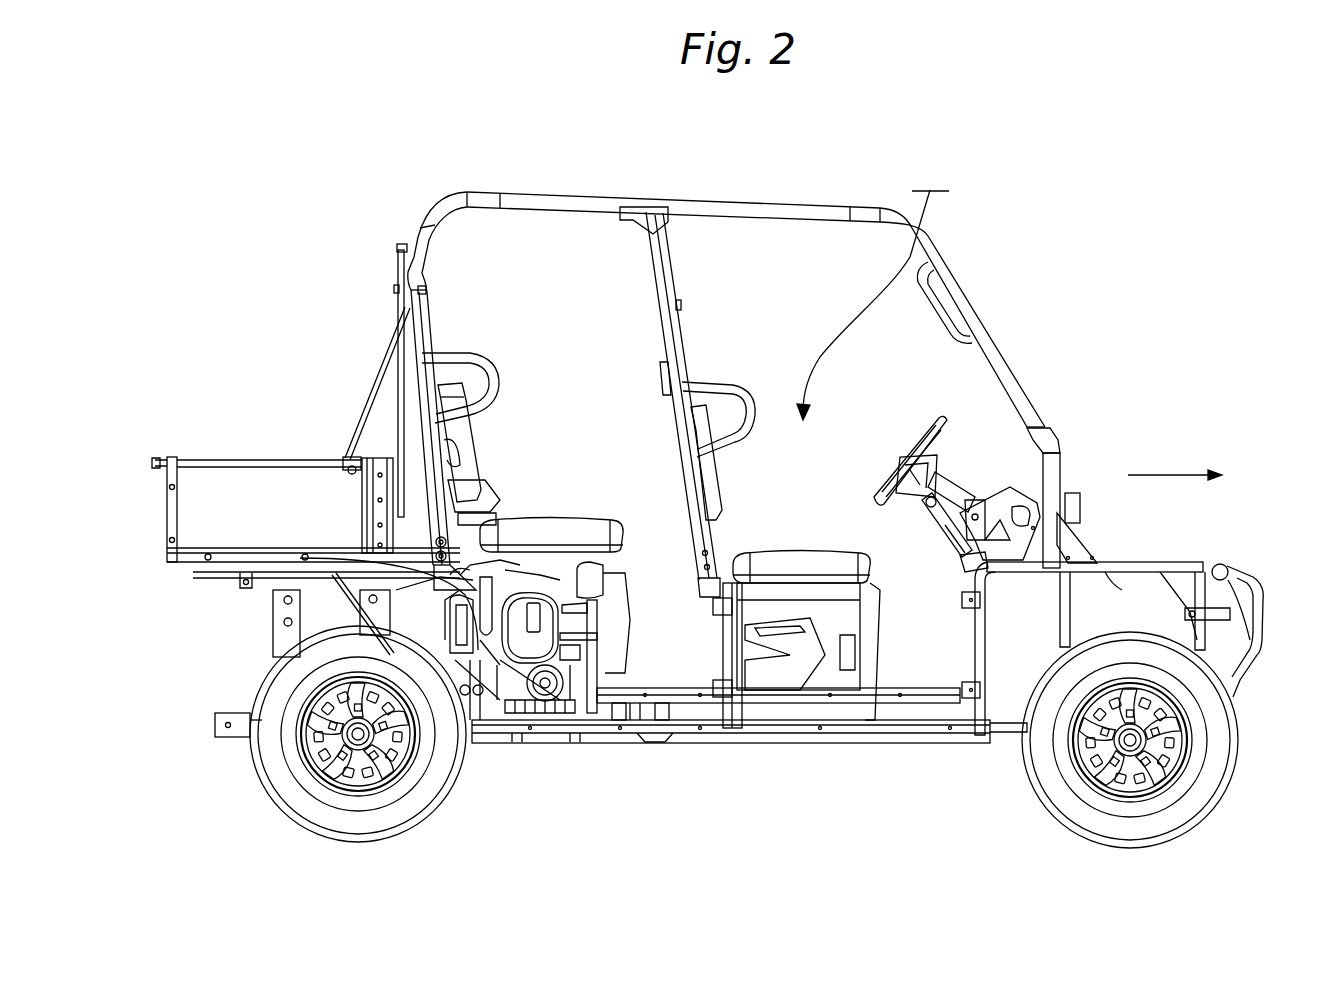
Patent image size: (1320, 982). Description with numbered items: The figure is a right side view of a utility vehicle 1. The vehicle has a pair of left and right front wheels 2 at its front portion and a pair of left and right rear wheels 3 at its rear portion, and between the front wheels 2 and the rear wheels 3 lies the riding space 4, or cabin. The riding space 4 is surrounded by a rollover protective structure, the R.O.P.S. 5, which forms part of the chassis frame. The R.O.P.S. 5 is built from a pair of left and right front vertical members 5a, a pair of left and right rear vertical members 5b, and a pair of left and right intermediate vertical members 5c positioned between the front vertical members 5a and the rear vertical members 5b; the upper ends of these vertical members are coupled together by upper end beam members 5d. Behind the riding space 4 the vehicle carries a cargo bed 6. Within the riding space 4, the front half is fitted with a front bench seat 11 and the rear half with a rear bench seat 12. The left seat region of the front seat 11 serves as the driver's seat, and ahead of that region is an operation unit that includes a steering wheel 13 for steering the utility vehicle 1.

The utility vehicle 1 is at (1028, 168).
The front wheels 2 is at (1203, 793).
The rear wheels 3 is at (407, 803).
The riding space 4 is at (697, 262).
The R.O.P.S. 5 is at (790, 170).
The front vertical members 5a is at (978, 333).
The rear vertical members 5b is at (430, 326).
The intermediate vertical members 5c is at (674, 340).
The upper end beam members 5d is at (702, 206).
The cargo bed 6 is at (217, 458).
The front bench seat 11 is at (797, 566).
The rear bench seat 12 is at (585, 535).
The steering wheel 13 is at (945, 430).